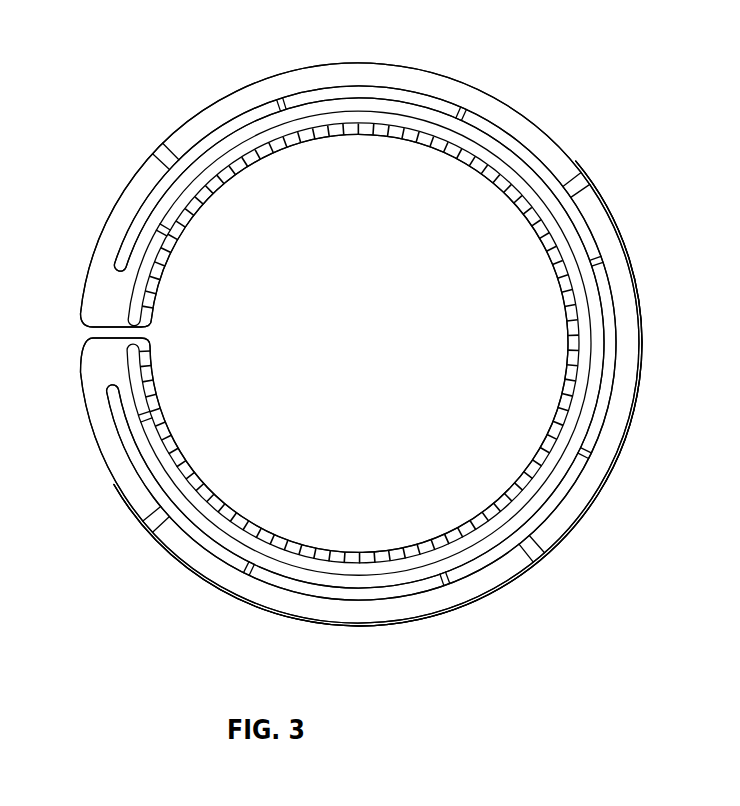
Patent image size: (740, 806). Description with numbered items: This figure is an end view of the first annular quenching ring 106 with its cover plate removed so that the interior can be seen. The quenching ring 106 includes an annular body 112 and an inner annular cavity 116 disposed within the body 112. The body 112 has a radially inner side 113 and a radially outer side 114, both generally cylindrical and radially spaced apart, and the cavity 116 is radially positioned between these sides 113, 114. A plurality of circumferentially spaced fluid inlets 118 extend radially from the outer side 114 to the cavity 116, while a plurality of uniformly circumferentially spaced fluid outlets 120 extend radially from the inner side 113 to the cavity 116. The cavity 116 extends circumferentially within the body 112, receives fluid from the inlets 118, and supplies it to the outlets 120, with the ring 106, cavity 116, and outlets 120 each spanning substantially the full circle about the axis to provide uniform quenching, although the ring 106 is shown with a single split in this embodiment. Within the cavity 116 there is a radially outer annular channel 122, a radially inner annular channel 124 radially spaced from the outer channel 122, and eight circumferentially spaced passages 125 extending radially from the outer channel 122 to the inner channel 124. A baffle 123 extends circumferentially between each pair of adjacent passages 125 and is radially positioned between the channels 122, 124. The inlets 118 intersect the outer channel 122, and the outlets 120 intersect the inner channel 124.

The first annular quenching ring 106 is at (433, 78).
The annular body 112 is at (487, 103).
The radially inner side 113 is at (495, 201).
The radially outer side 114 is at (560, 138).
The inner annular cavity 116 is at (128, 464).
The fluid inlets 118 is at (162, 150).
The fluid outlets 120 is at (550, 262).
The radially outer annular channel 122 is at (222, 555).
The baffle 123 is at (343, 103).
The radially inner annular channel 124 is at (242, 537).
The passages 125 is at (300, 112).